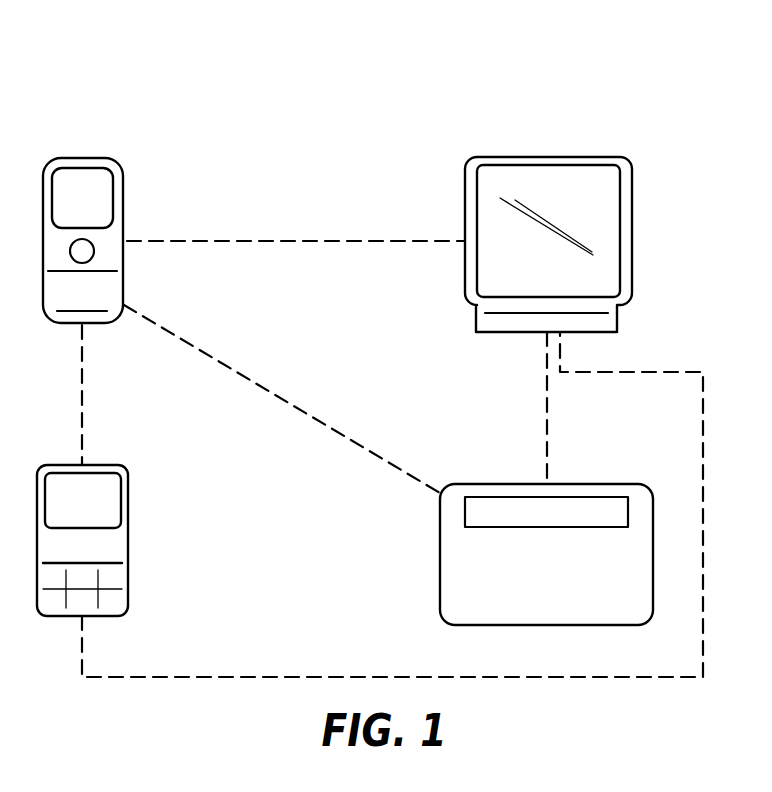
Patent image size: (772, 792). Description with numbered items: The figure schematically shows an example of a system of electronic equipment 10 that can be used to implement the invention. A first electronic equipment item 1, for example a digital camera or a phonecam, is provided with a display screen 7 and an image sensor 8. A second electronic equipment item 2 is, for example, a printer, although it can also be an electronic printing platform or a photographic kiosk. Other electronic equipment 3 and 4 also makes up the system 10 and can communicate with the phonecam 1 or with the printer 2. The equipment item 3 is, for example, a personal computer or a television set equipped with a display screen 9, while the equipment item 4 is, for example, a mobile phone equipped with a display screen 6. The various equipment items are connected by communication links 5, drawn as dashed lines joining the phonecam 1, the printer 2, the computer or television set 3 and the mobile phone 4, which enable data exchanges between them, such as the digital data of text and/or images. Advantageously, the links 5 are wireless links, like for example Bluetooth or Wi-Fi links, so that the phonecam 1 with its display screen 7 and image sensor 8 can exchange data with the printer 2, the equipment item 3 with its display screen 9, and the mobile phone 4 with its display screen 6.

The system of electronic equipment 10 is at (627, 88).
The first electronic equipment item 1 is at (113, 214).
The display screen 7 is at (82, 181).
The image sensor 8 is at (87, 251).
The electronic equipment item 3 is at (577, 220).
The display screen 9 is at (541, 182).
The second electronic equipment item 2 is at (456, 540).
The electronic equipment item 4 is at (110, 540).
The display screen 6 is at (92, 505).
The communication links 5 is at (322, 241).